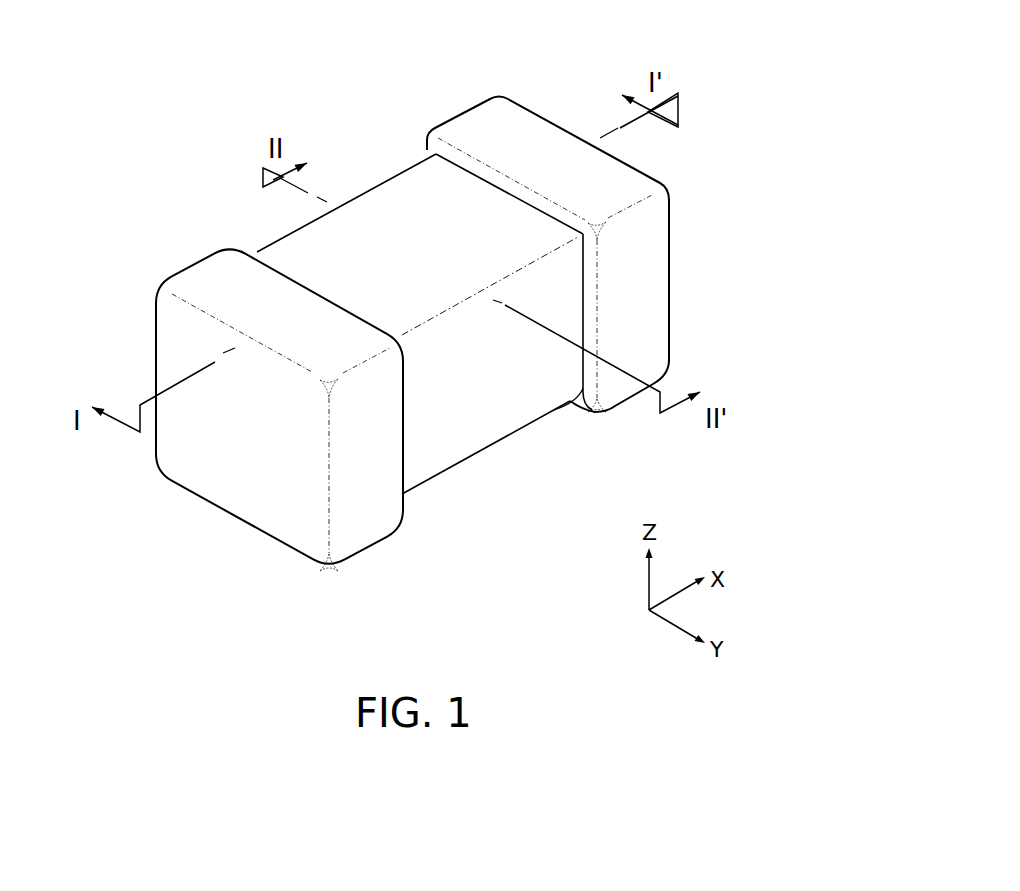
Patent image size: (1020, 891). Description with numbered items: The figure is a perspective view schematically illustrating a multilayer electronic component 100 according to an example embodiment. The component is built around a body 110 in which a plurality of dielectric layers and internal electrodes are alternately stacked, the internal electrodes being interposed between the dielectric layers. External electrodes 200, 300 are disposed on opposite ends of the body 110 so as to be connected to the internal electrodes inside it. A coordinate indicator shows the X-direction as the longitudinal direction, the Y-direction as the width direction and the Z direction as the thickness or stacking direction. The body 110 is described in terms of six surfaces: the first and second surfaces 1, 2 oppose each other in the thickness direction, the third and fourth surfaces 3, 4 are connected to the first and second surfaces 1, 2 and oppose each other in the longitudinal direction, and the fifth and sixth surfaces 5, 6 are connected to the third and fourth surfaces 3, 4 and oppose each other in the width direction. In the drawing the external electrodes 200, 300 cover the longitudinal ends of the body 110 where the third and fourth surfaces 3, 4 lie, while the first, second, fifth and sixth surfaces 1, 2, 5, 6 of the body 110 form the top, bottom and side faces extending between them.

The multilayer electronic component 100 is at (282, 35).
The body 110 is at (292, 262).
The external electrode 200 is at (208, 269).
The external electrode 300 is at (477, 117).
The first surface 1 is at (437, 448).
The second surface 2 is at (417, 185).
The third surface 3 is at (226, 453).
The fourth surface 4 is at (623, 243).
The fifth surface 5 is at (508, 388).
The sixth surface 6 is at (378, 222).